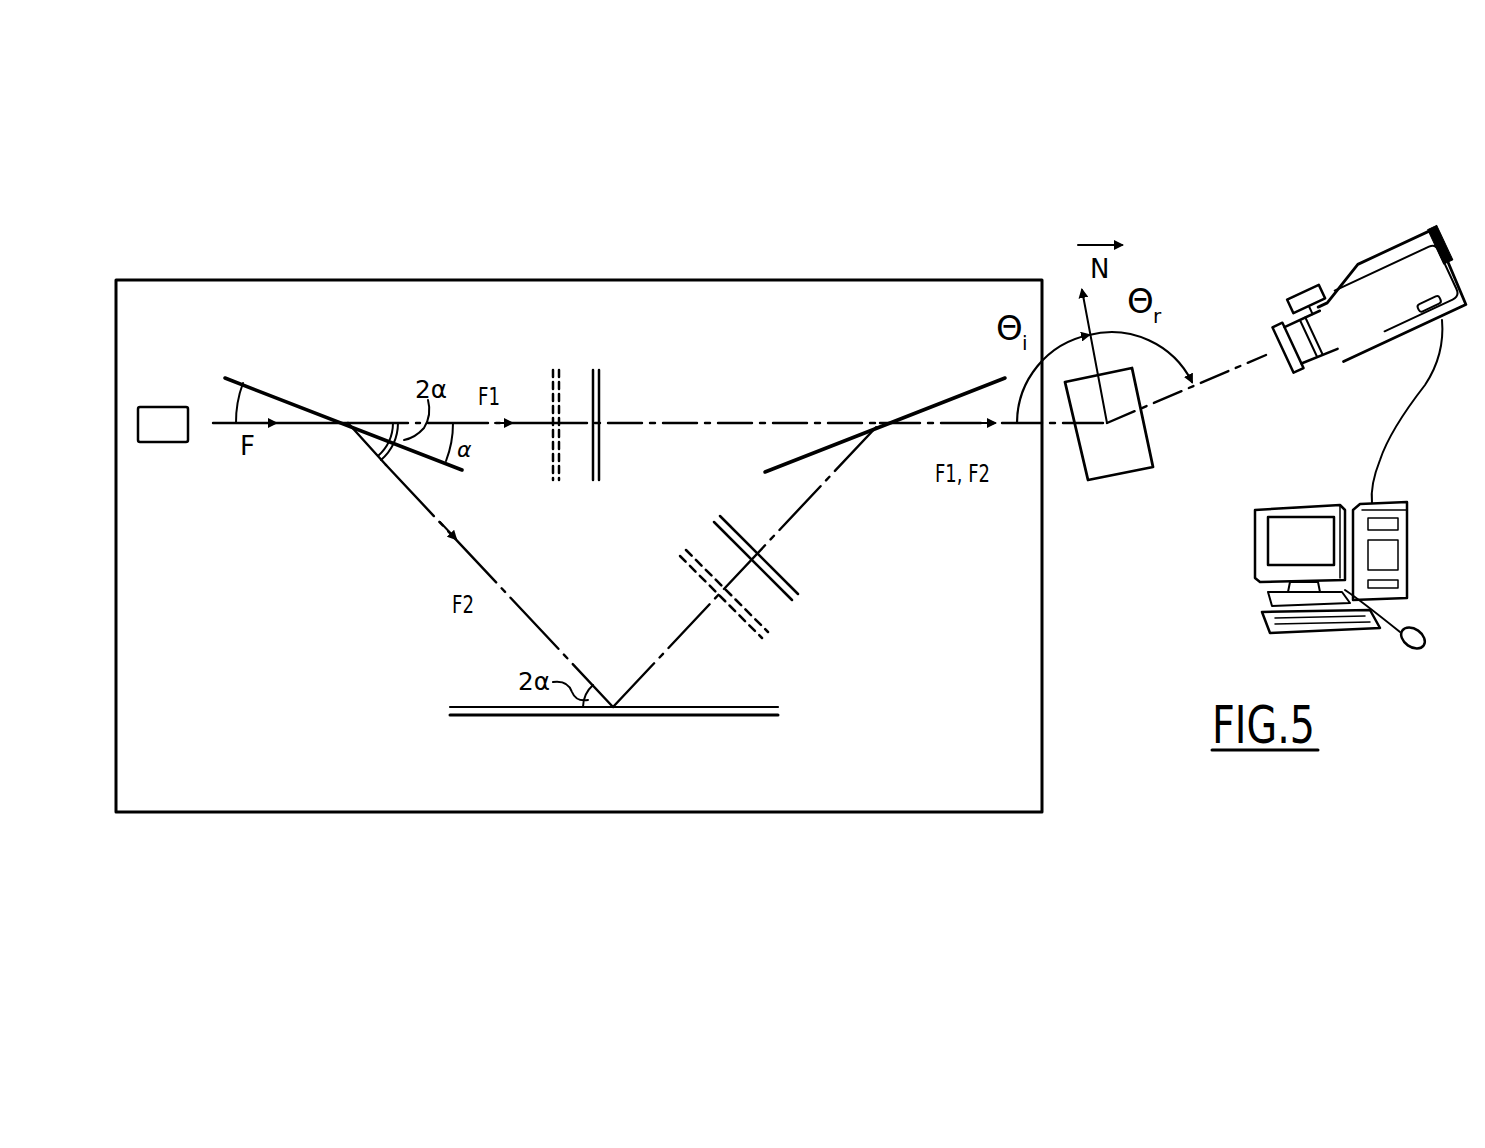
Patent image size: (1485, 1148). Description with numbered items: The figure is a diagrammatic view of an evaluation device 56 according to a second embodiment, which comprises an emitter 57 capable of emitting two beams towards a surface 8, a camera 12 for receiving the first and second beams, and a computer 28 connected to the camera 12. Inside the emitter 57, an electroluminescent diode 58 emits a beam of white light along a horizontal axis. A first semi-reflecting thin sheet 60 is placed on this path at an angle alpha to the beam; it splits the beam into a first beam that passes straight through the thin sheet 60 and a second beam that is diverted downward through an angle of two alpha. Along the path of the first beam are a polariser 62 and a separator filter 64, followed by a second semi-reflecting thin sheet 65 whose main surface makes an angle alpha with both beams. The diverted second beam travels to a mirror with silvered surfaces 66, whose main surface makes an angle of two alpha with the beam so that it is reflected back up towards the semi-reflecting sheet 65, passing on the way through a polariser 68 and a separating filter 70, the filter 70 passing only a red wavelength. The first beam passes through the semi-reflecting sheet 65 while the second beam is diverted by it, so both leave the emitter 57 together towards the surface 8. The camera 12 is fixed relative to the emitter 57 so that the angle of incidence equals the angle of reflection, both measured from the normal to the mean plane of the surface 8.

The evaluation device 56 is at (418, 213).
The emitter 57 is at (966, 814).
The electroluminescent diode 58 is at (158, 446).
The first semi-reflecting thin sheet 60 is at (262, 390).
The polariser 62 is at (548, 386).
The separator filter 64 is at (602, 390).
The second semi-reflecting thin sheet 65 is at (945, 405).
The mirror with silvered surfaces 66 is at (740, 718).
The polariser 68 is at (755, 630).
The separating filter 70 is at (790, 585).
The surface 8 is at (1112, 446).
The camera 12 is at (1388, 262).
The computer 28 is at (1388, 504).